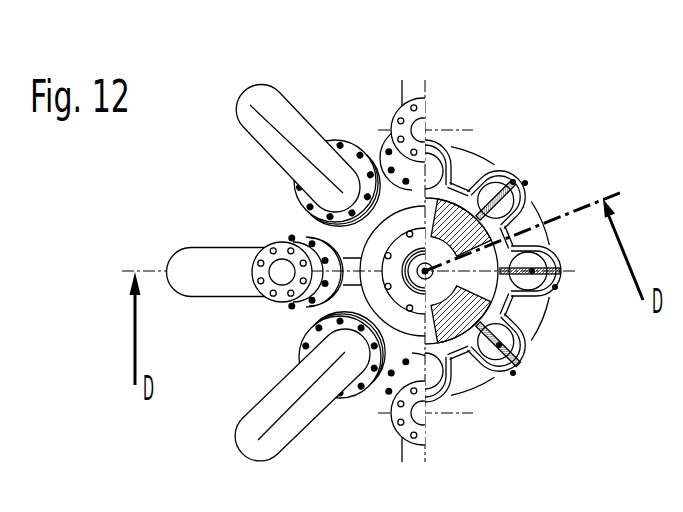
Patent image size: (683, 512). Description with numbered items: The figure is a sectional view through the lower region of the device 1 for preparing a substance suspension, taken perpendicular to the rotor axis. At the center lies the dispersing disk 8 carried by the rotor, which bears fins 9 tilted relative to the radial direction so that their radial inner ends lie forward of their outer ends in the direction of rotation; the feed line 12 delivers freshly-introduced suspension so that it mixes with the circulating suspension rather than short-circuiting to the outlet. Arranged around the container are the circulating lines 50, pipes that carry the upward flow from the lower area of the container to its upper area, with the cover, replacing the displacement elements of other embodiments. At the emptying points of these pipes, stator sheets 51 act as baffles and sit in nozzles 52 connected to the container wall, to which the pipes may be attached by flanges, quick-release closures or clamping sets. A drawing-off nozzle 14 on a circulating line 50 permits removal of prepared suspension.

The device 1 is at (567, 376).
The dispersing disk 8 is at (465, 222).
The fin 9 is at (455, 256).
The line 12 is at (420, 259).
The nozzle 14 is at (275, 278).
The circulating line 50 is at (288, 120).
The stator sheet 51 is at (497, 347).
The nozzle 52 is at (513, 373).